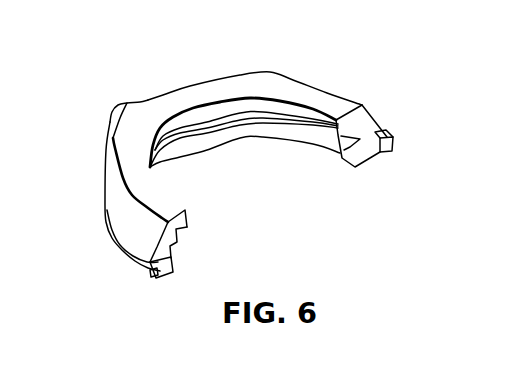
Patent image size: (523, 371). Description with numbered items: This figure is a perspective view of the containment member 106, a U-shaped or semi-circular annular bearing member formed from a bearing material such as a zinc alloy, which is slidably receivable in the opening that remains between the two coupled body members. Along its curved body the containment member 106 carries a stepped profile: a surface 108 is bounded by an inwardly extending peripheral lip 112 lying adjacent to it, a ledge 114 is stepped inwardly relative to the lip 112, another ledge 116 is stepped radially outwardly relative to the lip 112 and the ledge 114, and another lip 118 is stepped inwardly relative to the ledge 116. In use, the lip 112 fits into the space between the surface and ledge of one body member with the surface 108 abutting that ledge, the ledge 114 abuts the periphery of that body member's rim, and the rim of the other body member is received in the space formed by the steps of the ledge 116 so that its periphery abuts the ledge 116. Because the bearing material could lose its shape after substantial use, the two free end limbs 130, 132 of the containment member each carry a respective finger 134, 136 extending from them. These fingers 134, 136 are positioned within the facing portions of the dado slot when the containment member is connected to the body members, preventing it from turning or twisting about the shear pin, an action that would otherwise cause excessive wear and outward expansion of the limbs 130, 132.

The containment member 106 is at (307, 75).
The surface 108 is at (218, 83).
The peripheral lip 112 is at (187, 213).
The ledge 114 is at (175, 241).
The ledge 116 is at (344, 161).
The lip 118 is at (355, 170).
The free end limb 130 is at (132, 268).
The free end limb 132 is at (364, 119).
The finger 134 is at (166, 277).
The finger 136 is at (389, 153).